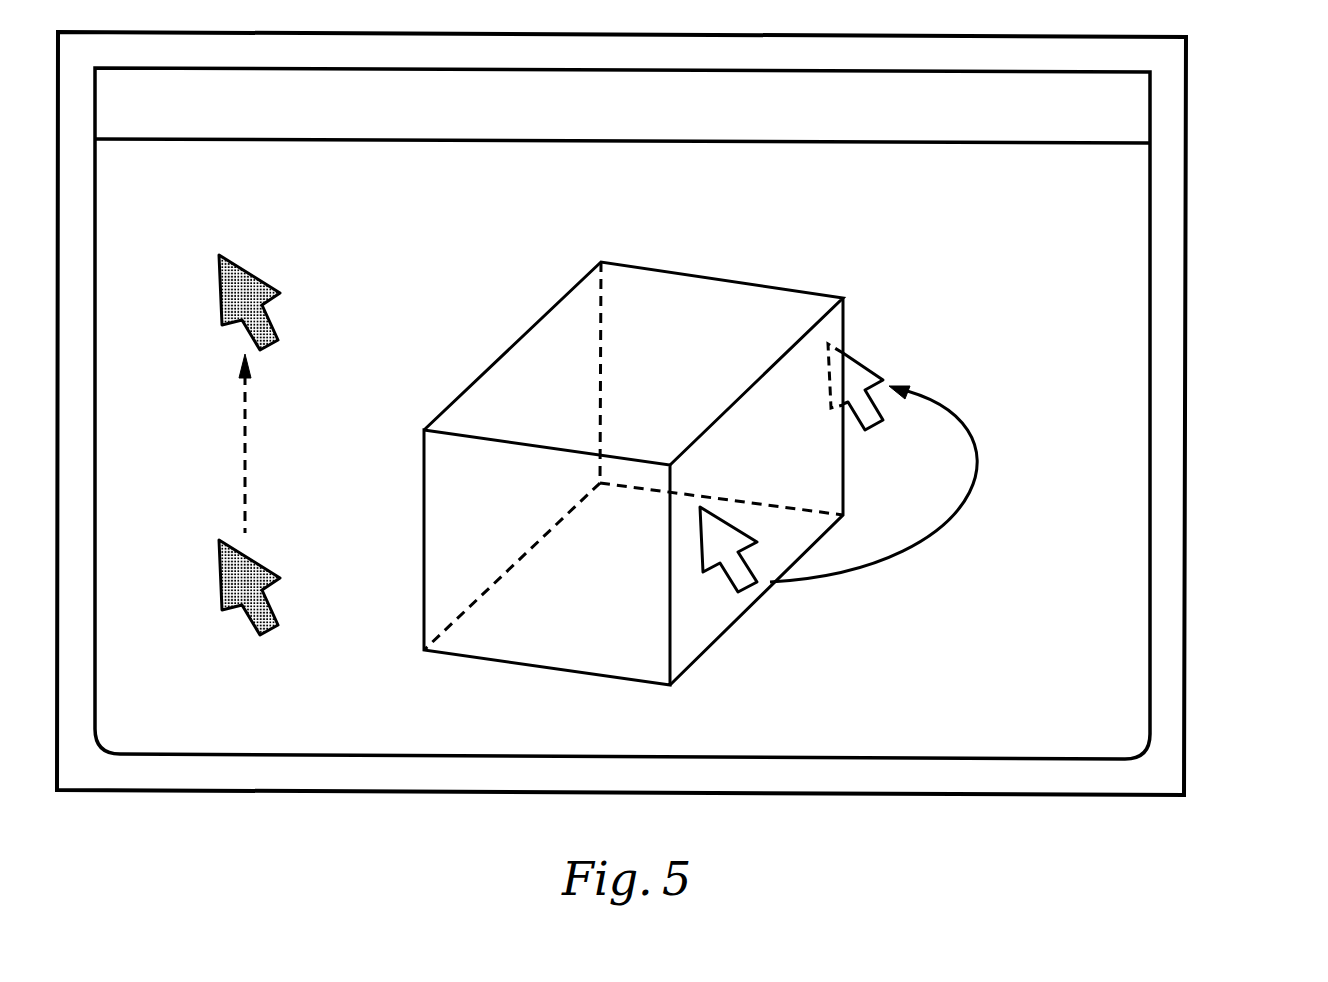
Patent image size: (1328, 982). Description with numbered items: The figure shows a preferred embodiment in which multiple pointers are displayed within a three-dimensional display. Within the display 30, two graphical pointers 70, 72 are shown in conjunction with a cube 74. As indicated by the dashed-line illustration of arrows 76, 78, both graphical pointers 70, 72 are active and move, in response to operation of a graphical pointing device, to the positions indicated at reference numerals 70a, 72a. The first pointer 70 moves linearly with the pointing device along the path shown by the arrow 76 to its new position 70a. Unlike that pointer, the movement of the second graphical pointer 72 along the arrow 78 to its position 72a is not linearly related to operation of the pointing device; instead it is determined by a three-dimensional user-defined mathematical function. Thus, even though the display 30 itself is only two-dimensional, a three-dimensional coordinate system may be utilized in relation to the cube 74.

The display 30 is at (1242, 325).
The graphical pointer 70 is at (275, 611).
The position of graphical pointer 70a is at (276, 323).
The graphical pointer 72 is at (733, 591).
The position of graphical pointer 72a is at (882, 380).
The cube 74 is at (717, 274).
The arrow 76 is at (247, 468).
The arrow 78 is at (978, 462).